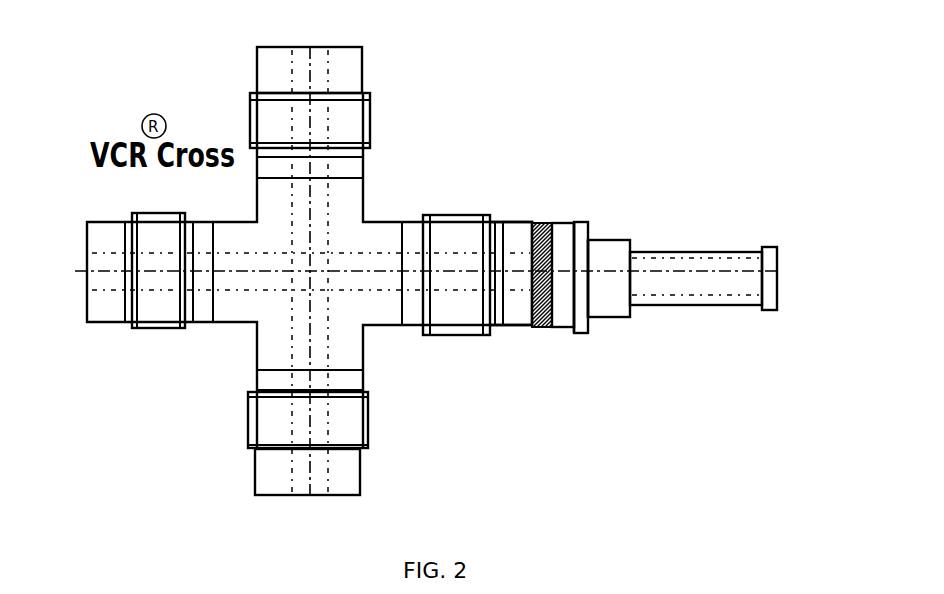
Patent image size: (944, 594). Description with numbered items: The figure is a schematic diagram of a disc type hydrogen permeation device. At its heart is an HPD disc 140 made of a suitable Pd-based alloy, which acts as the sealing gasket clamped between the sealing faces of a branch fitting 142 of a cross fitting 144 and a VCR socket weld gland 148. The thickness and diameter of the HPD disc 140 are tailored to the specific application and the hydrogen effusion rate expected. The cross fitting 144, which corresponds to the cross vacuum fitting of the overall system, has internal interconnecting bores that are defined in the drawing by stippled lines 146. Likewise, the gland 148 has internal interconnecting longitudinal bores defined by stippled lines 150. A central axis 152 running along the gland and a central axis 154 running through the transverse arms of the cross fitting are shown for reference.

The HPD disc 140 is at (543, 222).
The branch fitting 142 is at (500, 293).
The cross fitting 144 is at (190, 410).
The stippled lines 146 is at (238, 257).
The VCR socket weld gland 148 is at (690, 243).
The stippled lines 150 is at (596, 252).
The central axis 152 is at (785, 273).
The central axis 154 is at (328, 46).